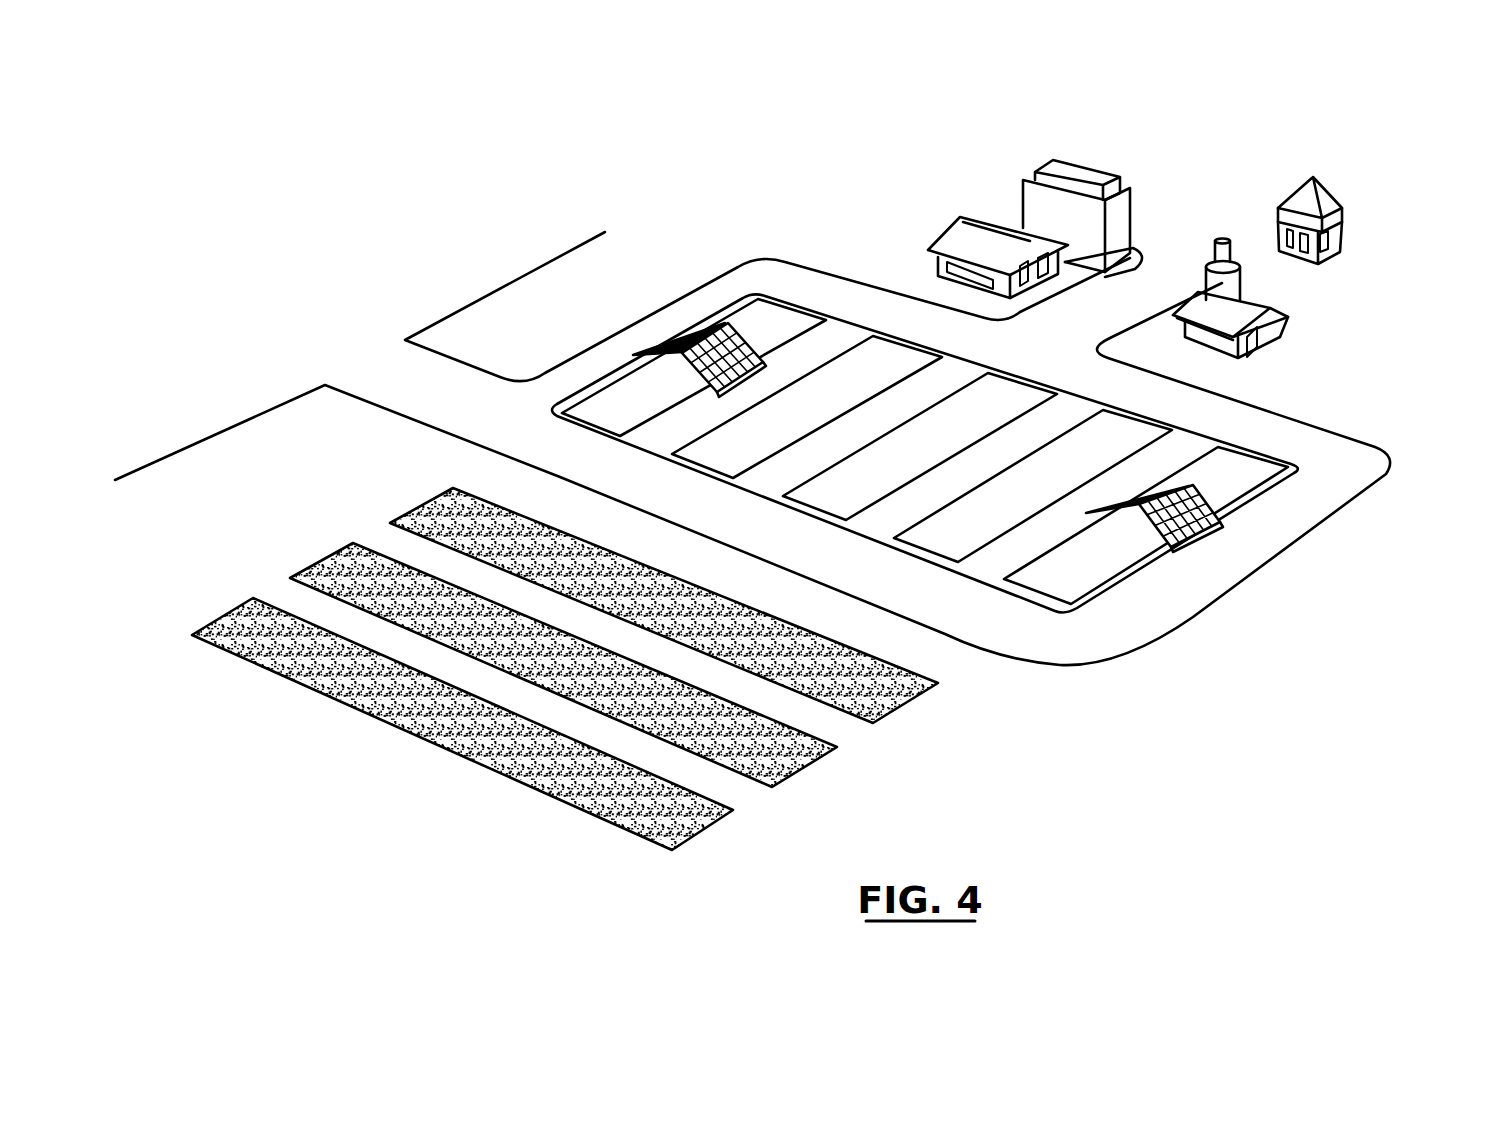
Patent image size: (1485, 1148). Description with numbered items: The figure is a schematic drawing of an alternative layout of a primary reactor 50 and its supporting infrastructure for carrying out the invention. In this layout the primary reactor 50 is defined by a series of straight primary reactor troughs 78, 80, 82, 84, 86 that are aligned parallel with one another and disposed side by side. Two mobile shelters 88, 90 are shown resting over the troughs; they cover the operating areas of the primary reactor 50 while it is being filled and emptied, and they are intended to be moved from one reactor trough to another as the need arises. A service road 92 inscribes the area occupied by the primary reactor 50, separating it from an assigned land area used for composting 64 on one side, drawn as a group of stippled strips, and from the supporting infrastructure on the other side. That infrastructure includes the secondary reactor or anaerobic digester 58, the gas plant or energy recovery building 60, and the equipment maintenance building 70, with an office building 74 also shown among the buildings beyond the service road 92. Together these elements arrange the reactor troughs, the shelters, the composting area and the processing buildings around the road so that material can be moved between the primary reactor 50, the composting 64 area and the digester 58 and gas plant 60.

The primary reactor 50 is at (814, 308).
The anaerobic digester 58 is at (1093, 212).
The gas plant 60 is at (1273, 330).
The composting area 64 is at (877, 700).
The equipment maintenance building 70 is at (957, 233).
The office building 74 is at (1330, 203).
The primary reactor trough 78 is at (593, 410).
The primary reactor trough 80 is at (697, 452).
The primary reactor trough 82 is at (795, 500).
The primary reactor trough 84 is at (933, 538).
The primary reactor trough 86 is at (1030, 579).
The mobile shelter 88 is at (687, 335).
The mobile shelter 90 is at (1192, 537).
The service road 92 is at (1113, 640).